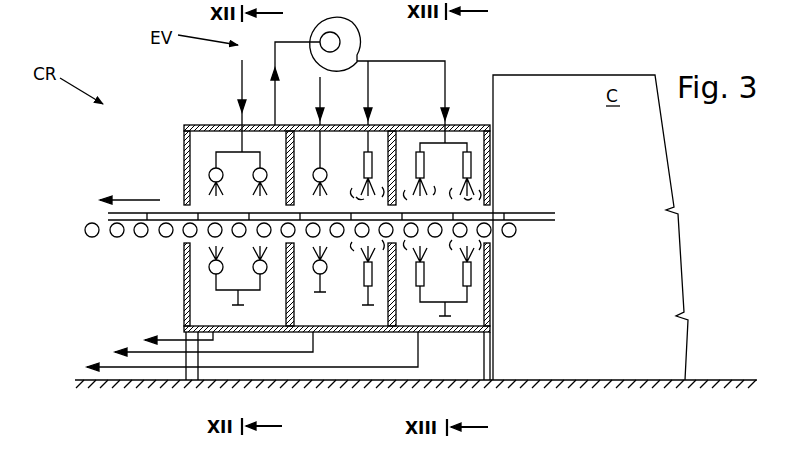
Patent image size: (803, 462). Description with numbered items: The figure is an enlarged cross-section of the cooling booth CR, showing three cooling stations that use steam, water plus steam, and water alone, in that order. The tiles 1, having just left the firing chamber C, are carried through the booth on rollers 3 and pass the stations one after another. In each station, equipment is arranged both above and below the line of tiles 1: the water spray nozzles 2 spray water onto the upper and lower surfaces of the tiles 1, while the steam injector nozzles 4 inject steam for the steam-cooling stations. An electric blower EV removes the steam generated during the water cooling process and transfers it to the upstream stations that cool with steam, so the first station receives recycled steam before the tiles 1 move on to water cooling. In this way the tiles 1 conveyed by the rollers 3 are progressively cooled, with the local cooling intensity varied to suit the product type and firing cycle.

The tiles 1 is at (172, 213).
The water spray nozzles 2 is at (258, 172).
The rollers 3 is at (85, 235).
The steam injector nozzles 4 is at (471, 165).